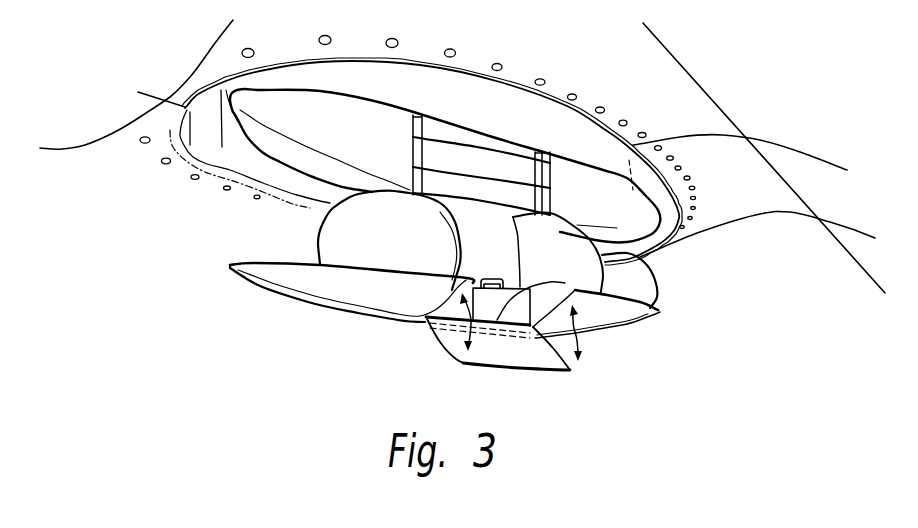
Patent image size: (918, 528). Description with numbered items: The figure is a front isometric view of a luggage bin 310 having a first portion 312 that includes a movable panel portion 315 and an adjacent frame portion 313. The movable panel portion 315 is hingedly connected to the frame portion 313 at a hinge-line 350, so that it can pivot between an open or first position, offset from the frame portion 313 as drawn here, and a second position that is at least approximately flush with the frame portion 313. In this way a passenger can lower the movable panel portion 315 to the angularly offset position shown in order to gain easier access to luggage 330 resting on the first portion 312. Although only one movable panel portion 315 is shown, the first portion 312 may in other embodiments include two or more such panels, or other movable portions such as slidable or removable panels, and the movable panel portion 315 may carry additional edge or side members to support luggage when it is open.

The luggage bin 310 is at (714, 358).
The first portion 312 is at (255, 262).
The frame portion 313 is at (428, 321).
The movable panel portion 315 is at (540, 370).
The luggage 330 is at (507, 287).
The hinge-line 350 is at (603, 283).